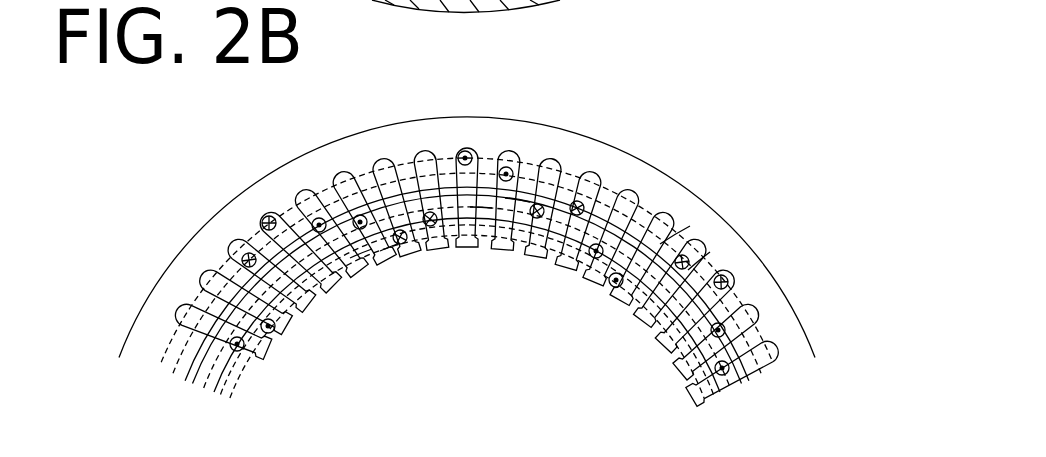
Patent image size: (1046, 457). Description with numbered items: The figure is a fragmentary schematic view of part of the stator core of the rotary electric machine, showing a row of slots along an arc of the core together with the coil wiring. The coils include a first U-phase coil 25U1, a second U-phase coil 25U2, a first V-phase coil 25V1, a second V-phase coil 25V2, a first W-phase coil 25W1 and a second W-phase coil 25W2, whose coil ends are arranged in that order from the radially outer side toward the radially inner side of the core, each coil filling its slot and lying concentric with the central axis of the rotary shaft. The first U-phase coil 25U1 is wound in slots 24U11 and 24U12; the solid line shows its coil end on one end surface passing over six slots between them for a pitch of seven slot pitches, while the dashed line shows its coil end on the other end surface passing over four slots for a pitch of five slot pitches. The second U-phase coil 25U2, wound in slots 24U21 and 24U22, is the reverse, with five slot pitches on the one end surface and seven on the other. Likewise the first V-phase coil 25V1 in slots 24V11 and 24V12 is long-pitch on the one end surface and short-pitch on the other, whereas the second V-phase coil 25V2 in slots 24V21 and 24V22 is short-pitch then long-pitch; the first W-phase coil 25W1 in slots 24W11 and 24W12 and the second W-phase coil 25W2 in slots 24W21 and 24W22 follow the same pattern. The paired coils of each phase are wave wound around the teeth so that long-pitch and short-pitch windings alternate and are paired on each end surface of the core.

The slot 24U11 is at (465, 156).
The slot 24U12 is at (268, 221).
The slot 24U21 is at (509, 159).
The slot 24U22 is at (236, 247).
The slot 24V11 is at (304, 198).
The slot 24V12 is at (592, 180).
The slot 24V21 is at (342, 180).
The slot 24V22 is at (551, 167).
The slot 24W11 is at (184, 312).
The slot 24W12 is at (424, 159).
The slot 24W21 is at (208, 278).
The slot 24W22 is at (384, 167).
The first U-phase coil 25U1 is at (712, 254).
The second U-phase coil 25U2 is at (688, 225).
The first V-phase coil 25V1 is at (523, 200).
The second V-phase coil 25V2 is at (483, 215).
The first W-phase coil 25W1 is at (388, 262).
The second W-phase coil 25W2 is at (360, 262).